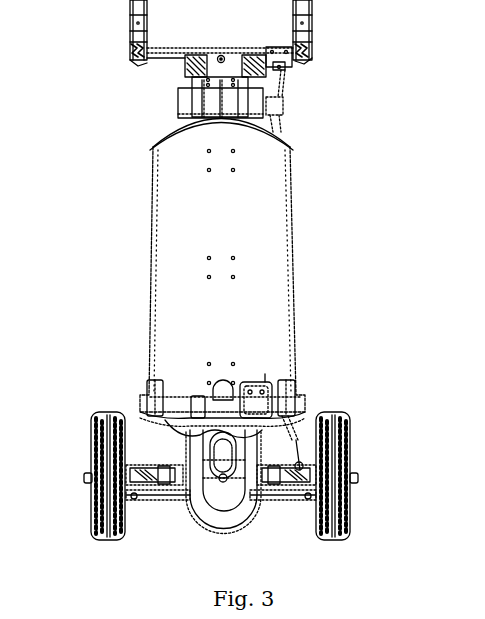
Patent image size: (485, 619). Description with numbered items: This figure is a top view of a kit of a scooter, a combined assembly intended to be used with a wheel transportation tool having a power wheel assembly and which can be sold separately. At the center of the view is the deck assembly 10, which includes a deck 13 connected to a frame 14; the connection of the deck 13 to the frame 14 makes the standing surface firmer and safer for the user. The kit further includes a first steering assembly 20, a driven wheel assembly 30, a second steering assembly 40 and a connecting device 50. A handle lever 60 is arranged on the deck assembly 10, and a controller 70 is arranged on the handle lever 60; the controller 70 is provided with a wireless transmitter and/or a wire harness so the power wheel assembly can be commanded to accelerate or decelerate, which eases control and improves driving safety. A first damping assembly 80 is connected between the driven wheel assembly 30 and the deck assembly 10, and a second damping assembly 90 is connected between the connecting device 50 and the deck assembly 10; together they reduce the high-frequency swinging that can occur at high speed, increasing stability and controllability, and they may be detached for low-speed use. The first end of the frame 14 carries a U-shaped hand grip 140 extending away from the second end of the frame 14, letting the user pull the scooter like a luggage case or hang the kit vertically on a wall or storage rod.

The deck assembly 10 is at (303, 277).
The deck 13 is at (275, 195).
The frame 14 is at (186, 105).
The first steering assembly 20 is at (178, 494).
The driven wheel assembly 30 is at (358, 459).
The second steering assembly 40 is at (181, 75).
The connecting device 50 is at (321, 25).
The handle lever 60 is at (152, 380).
The controller 70 is at (274, 387).
The first damping assembly 80 is at (300, 424).
The second damping assembly 90 is at (284, 102).
The hand grip 140 is at (247, 522).